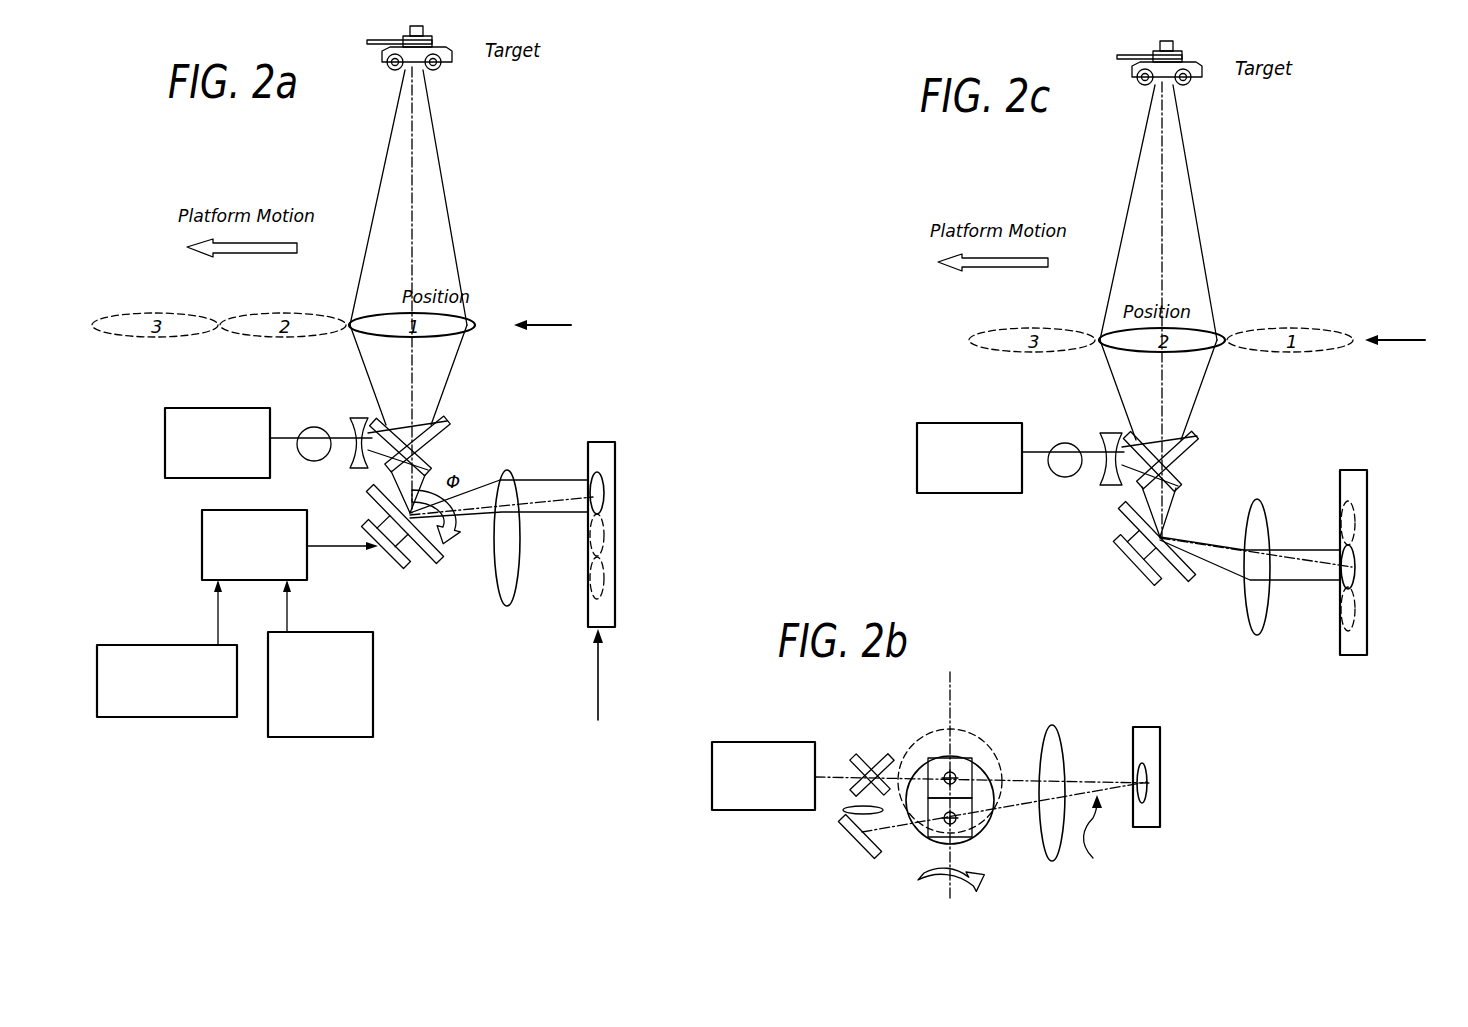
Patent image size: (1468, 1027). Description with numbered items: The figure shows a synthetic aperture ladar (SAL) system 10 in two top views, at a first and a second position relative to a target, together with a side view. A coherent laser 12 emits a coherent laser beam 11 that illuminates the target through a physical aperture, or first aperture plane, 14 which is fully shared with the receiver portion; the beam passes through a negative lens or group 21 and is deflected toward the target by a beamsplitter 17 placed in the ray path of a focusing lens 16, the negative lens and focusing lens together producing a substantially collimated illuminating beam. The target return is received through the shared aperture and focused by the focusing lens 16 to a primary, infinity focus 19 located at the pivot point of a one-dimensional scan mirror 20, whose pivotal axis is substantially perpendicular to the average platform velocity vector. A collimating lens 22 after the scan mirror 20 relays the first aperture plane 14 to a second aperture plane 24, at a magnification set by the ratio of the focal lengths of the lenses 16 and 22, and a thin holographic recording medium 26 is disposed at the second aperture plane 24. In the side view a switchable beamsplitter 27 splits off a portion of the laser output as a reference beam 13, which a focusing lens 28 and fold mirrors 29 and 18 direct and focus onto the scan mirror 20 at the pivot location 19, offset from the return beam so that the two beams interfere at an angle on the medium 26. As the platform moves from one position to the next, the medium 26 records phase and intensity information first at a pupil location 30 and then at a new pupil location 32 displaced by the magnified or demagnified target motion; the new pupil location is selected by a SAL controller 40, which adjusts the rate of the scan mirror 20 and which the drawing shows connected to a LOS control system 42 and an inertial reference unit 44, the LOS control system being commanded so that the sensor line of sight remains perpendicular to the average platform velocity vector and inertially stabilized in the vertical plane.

In FIG. 2a, the SAL system 10 is at (562, 186).
In FIG. 2a, the coherent laser beam 11 is at (437, 165).
In FIG. 2c, the coherent laser beam 11 is at (1187, 332).
In FIG. 2a, the coherent laser 12 is at (191, 408).
In FIG. 2b, the coherent laser 12 is at (737, 742).
In FIG. 2c, the coherent laser 12 is at (942, 423).
In FIG. 2b, the reference beam 13 is at (1105, 833).
In FIG. 2a, the physical aperture (first aperture plane) 14 is at (559, 327).
In FIG. 2c, the physical aperture (first aperture plane) 14 is at (1411, 342).
In FIG. 2a, the focusing lens 16 is at (476, 327).
In FIG. 2b, the focusing lens 16 is at (963, 735).
In FIG. 2c, the focusing lens 16 is at (1225, 340).
In FIG. 2a, the beamsplitter 17 is at (447, 420).
In FIG. 2b, the beamsplitter 17 is at (967, 770).
In FIG. 2c, the beamsplitter 17 is at (1195, 435).
In FIG. 2a, the fold mirror 18 is at (432, 458).
In FIG. 2b, the fold mirror 18 is at (965, 822).
In FIG. 2c, the fold mirror 18 is at (1178, 468).
In FIG. 2a, the infinity focus (pivot location) 19 is at (445, 548).
In FIG. 2c, the infinity focus (pivot location) 19 is at (1177, 528).
In FIG. 2a, the scan mirror 20 is at (425, 563).
In FIG. 2b, the scan mirror 20 is at (920, 758).
In FIG. 2c, the scan mirror 20 is at (1180, 577).
In FIG. 2a, the negative lens 21 is at (358, 418).
In FIG. 2c, the negative lens 21 is at (1110, 433).
In FIG. 2a, the collimating lens 22 is at (514, 598).
In FIG. 2b, the collimating lens 22 is at (1052, 860).
In FIG. 2c, the collimating lens 22 is at (1265, 623).
In FIG. 2a, the second aperture plane 24 is at (595, 685).
In FIG. 2a, the holographic recording medium 26 is at (616, 571).
In FIG. 2b, the holographic recording medium 26 is at (1160, 816).
In FIG. 2c, the holographic recording medium 26 is at (1367, 600).
In FIG. 2a, the switchable beamsplitter 27 is at (313, 461).
In FIG. 2b, the switchable beamsplitter 27 is at (862, 755).
In FIG. 2c, the switchable beamsplitter 27 is at (1065, 477).
In FIG. 2b, the focusing lens 28 is at (848, 810).
In FIG. 2b, the fold mirror 29 is at (856, 838).
In FIG. 2a, the detector element 30 is at (612, 498).
In FIG. 2b, the detector element 30 is at (1160, 783).
In FIG. 2c, the new pupil location 32 is at (1362, 567).
In FIG. 2a, the SAL controller 40 is at (202, 545).
In FIG. 2a, the LOS control system 42 is at (128, 645).
In FIG. 2a, the inertial reference unit 44 is at (373, 681).